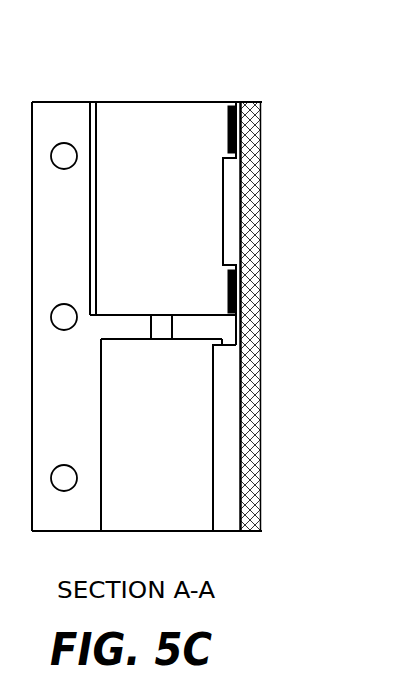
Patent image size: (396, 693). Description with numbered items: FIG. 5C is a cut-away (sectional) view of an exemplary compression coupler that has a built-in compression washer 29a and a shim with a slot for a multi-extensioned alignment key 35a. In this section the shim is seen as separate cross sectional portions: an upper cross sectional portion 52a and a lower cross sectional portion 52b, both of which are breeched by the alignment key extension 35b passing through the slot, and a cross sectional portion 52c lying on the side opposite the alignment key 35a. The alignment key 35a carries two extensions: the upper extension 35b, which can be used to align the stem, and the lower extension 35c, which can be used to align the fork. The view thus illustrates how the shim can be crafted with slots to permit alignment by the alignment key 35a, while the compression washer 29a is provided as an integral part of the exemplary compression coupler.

The upper cross sectional portion of shim 52a is at (228, 120).
The lower cross sectional portion of shim 52b is at (229, 298).
The cross sectional portion of shim opposite the alignment key 52c is at (97, 195).
The upper extension of alignment key 35b is at (232, 222).
The lower extension of alignment key 35c is at (213, 433).
The alignment key 35a is at (229, 400).
The compression washer 29a is at (100, 319).